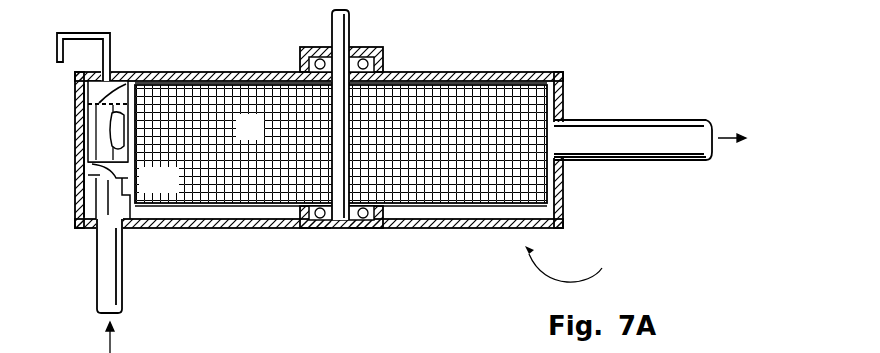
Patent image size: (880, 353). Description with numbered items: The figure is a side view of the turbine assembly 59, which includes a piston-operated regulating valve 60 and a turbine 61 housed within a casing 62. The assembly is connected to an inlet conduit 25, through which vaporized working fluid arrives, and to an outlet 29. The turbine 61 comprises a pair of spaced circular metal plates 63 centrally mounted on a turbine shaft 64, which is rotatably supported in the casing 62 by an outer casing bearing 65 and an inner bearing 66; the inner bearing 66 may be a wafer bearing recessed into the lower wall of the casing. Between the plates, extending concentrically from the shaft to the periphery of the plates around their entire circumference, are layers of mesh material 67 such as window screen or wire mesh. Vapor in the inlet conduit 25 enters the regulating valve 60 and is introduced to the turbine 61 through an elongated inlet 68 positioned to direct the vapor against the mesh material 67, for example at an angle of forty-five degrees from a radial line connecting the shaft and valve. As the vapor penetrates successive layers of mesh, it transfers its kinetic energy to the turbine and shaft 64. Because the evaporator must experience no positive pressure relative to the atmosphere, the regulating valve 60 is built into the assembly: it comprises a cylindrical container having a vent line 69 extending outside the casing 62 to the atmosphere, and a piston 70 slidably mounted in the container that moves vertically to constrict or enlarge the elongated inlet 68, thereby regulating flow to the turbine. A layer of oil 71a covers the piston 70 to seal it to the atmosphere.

The inlet conduit 25 is at (107, 265).
The outlet 29 is at (628, 147).
The turbine assembly 59 is at (563, 263).
The piston-operated regulating valve 60 is at (101, 198).
The turbine 61 is at (262, 137).
The casing 62 is at (452, 229).
The circular metal plates 63 is at (220, 83).
The turbine shaft 64 is at (340, 27).
The outer casing bearing 65 is at (384, 58).
The inner bearing 66 is at (365, 224).
The mesh material 67 is at (547, 98).
The elongated inlet 68 is at (124, 176).
The vent line 69 is at (84, 40).
The piston 70 is at (100, 144).
The layer of oil 71a is at (115, 100).